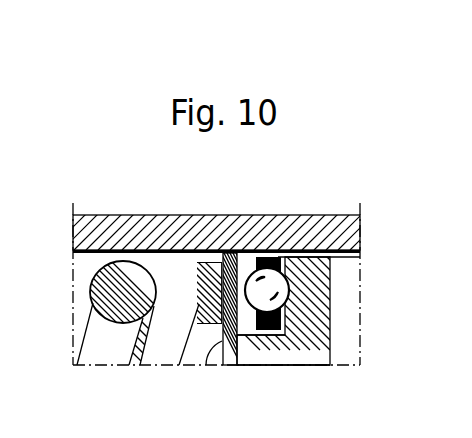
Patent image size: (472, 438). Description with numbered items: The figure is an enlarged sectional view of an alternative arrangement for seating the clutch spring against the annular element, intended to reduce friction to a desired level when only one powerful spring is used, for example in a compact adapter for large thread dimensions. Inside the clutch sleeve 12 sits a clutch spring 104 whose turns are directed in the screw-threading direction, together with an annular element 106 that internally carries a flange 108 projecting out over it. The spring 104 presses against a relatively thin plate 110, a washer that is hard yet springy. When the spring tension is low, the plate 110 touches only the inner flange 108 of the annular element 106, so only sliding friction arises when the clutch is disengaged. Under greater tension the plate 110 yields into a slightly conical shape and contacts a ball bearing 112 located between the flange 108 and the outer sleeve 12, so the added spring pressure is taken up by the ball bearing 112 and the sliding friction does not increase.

The clutch sleeve 12 is at (175, 228).
The clutch spring 104 is at (118, 262).
The annular element 106 is at (309, 262).
The flange 108 is at (260, 364).
The plate 110 is at (223, 358).
The ball bearing 112 is at (266, 262).